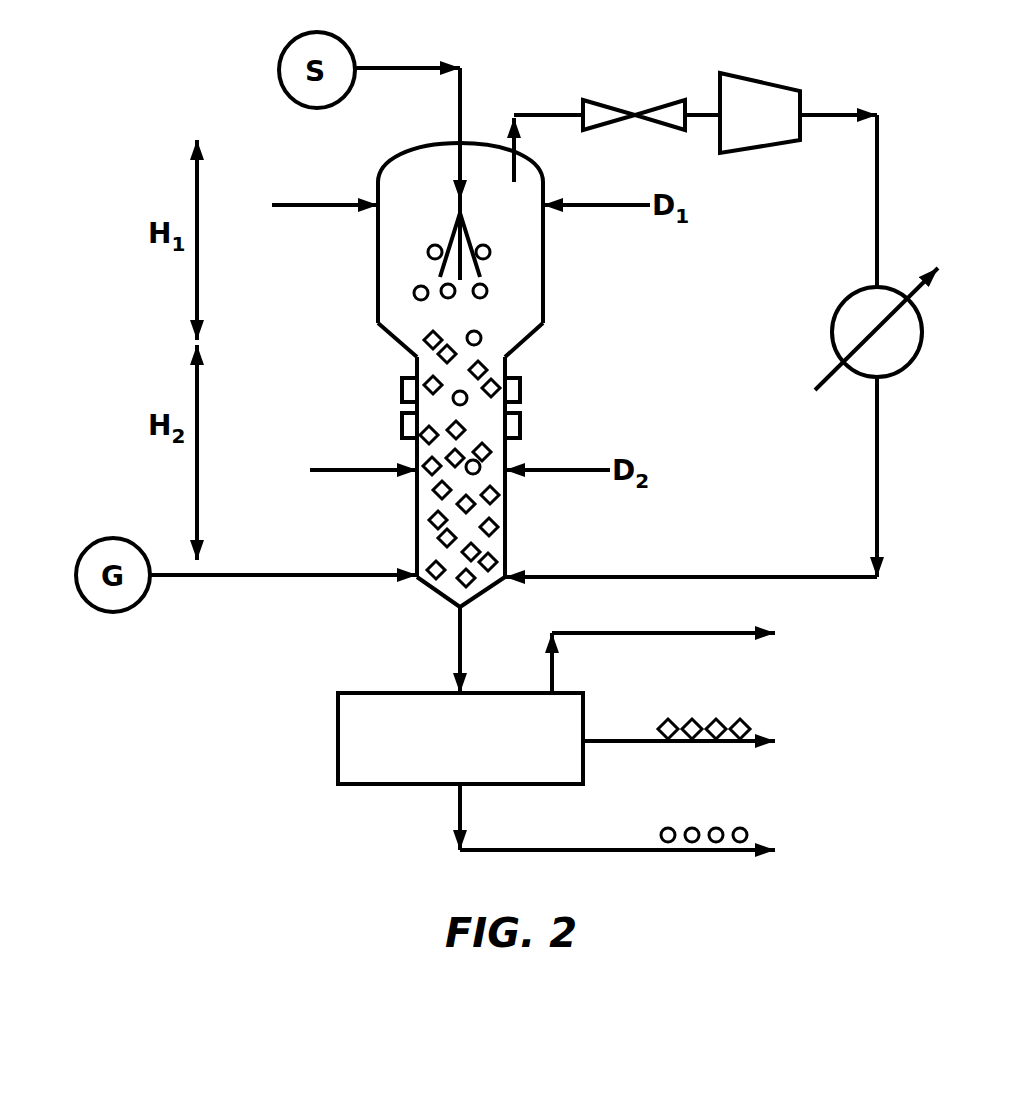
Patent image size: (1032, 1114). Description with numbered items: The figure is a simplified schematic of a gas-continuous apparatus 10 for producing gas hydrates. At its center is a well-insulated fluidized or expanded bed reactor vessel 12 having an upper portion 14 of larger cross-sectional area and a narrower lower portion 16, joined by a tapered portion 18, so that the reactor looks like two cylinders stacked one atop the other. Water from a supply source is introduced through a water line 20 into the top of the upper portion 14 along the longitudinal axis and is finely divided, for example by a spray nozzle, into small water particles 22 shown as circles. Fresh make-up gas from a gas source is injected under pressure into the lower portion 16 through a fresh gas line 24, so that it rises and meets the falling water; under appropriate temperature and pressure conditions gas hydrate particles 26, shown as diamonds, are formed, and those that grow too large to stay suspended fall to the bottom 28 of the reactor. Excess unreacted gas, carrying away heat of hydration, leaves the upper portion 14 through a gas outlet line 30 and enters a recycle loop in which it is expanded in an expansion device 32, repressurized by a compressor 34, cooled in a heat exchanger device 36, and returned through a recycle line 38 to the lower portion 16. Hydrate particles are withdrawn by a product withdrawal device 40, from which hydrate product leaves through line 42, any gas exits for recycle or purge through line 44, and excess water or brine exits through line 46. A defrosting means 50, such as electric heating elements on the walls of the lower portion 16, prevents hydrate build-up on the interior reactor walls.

The gas-continuous apparatus 10 is at (190, 640).
The reactor vessel 12 is at (515, 418).
The upper portion 14 is at (525, 278).
The lower portion 16 is at (427, 540).
The tapered portion 18 is at (393, 342).
The water line 20 is at (432, 62).
The finely divided water particles 22 is at (428, 252).
The fresh gas line 24 is at (292, 578).
The gas hydrate particles 26 is at (495, 562).
The bottom 28 is at (478, 598).
The gas outlet line 30 is at (520, 142).
The expansion device 32 is at (648, 106).
The compressor 34 is at (798, 180).
The heat exchanger device 36 is at (876, 329).
The recycle line 38 is at (700, 576).
The product withdrawal device 40 is at (460, 738).
The line 42 is at (644, 739).
The line 44 is at (700, 632).
The line 46 is at (645, 848).
The defrosting means 50 is at (522, 392).